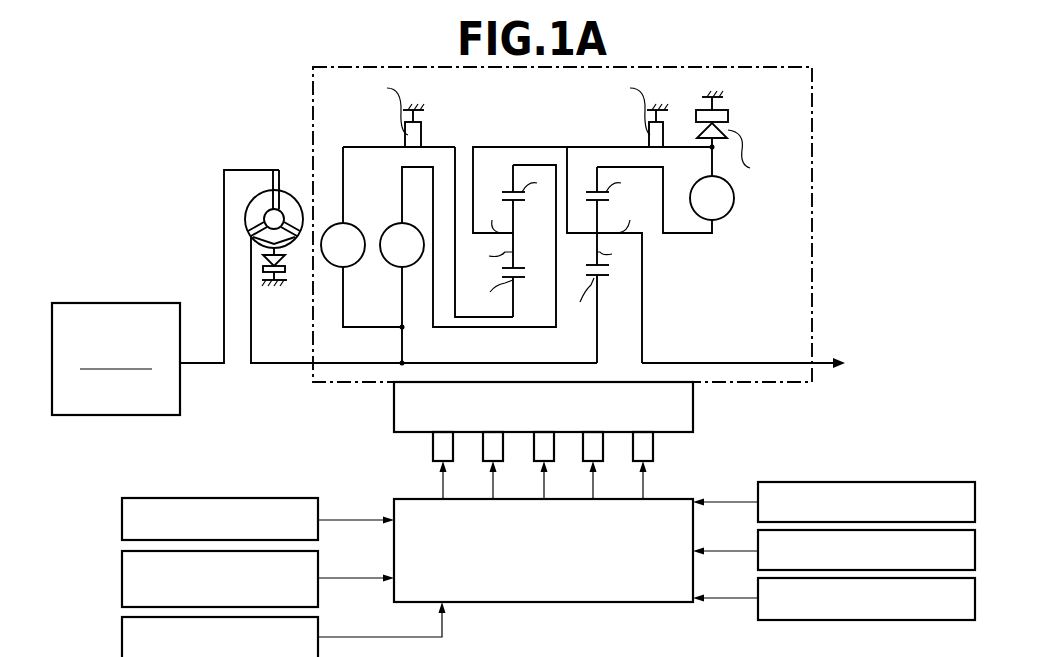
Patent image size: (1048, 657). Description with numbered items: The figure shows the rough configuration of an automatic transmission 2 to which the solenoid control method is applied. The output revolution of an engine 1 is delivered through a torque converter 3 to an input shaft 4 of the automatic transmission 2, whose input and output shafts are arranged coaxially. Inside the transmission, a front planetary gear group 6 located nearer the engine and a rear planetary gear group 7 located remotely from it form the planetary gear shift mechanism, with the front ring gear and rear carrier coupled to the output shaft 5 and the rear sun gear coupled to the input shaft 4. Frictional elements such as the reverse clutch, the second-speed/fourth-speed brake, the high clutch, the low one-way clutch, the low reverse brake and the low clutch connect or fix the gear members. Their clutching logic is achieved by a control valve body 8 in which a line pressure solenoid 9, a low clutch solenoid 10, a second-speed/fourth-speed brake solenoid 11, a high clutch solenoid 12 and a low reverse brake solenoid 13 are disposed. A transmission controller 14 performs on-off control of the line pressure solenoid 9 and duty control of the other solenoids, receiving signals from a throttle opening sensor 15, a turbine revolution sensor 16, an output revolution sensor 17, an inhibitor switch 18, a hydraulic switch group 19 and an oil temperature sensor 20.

The engine 1 is at (104, 303).
The automatic transmission 2 is at (818, 110).
The torque converter 3 is at (286, 180).
The input shaft 4 is at (268, 365).
The output shaft 5 is at (699, 362).
The front planetary gear group 6 is at (505, 158).
The rear planetary gear group 7 is at (584, 158).
The control valve body 8 is at (693, 408).
The line pressure solenoid 9 is at (433, 452).
The low clutch solenoid 10 is at (483, 452).
The 2nd-speed/4th-speed brake solenoid 11 is at (534, 452).
The high clutch solenoid 12 is at (583, 452).
The low reverse brake solenoid 13 is at (633, 452).
The transmission controller 14 is at (666, 499).
The throttle opening sensor 15 is at (122, 518).
The turbine revolution sensor 16 is at (122, 578).
The output revolution sensor 17 is at (975, 492).
The inhibitor switch 18 is at (975, 550).
The hydraulic switch group 19 is at (975, 598).
The oil temperature sensor 20 is at (122, 636).